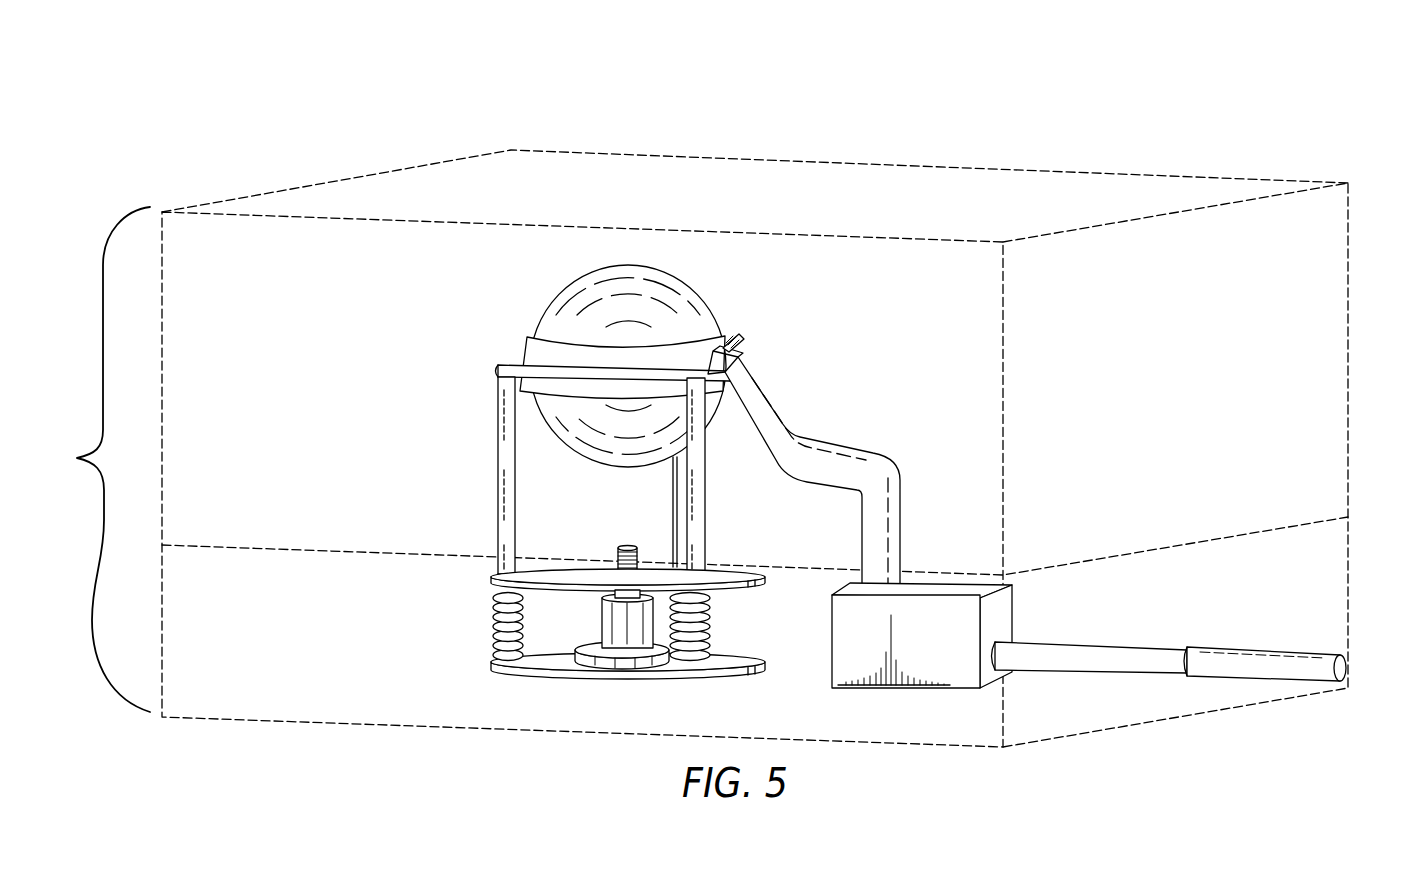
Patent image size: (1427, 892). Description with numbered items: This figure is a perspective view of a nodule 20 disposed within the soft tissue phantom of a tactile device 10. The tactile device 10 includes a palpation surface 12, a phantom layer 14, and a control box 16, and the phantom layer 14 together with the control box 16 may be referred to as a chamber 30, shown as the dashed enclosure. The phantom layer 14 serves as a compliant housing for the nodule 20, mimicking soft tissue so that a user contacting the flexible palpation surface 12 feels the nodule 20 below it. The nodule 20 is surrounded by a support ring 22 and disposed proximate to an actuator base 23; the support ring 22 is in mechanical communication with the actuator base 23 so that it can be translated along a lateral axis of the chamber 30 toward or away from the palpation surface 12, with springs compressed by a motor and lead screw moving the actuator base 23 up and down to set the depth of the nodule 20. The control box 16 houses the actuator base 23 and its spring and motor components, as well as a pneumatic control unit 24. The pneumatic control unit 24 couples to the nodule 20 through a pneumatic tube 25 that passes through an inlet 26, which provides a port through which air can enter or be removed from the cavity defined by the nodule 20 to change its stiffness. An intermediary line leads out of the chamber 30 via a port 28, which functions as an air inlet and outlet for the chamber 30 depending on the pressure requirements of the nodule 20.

The tactile device 10 is at (316, 87).
The palpation surface 12 is at (962, 181).
The phantom layer 14 is at (1349, 340).
The control box 16 is at (1349, 580).
The nodule 20 is at (712, 309).
The support ring 22 is at (520, 345).
The actuator base 23 is at (562, 570).
The pneumatic control unit 24 is at (888, 684).
The pneumatic tube 25 is at (760, 386).
The inlet 26 is at (738, 339).
The port 28 is at (1346, 664).
The chamber 30 is at (98, 459).